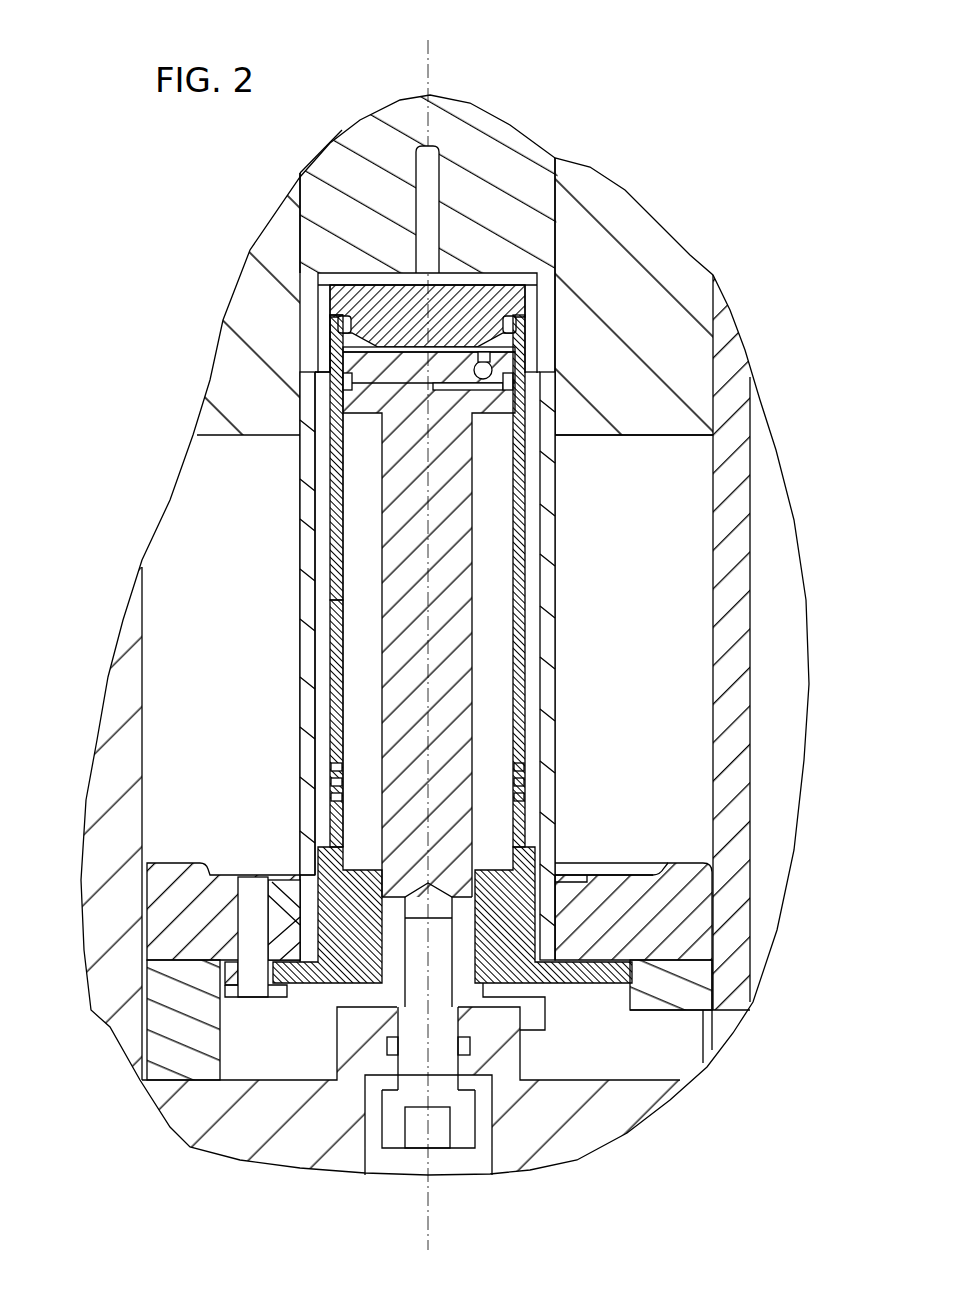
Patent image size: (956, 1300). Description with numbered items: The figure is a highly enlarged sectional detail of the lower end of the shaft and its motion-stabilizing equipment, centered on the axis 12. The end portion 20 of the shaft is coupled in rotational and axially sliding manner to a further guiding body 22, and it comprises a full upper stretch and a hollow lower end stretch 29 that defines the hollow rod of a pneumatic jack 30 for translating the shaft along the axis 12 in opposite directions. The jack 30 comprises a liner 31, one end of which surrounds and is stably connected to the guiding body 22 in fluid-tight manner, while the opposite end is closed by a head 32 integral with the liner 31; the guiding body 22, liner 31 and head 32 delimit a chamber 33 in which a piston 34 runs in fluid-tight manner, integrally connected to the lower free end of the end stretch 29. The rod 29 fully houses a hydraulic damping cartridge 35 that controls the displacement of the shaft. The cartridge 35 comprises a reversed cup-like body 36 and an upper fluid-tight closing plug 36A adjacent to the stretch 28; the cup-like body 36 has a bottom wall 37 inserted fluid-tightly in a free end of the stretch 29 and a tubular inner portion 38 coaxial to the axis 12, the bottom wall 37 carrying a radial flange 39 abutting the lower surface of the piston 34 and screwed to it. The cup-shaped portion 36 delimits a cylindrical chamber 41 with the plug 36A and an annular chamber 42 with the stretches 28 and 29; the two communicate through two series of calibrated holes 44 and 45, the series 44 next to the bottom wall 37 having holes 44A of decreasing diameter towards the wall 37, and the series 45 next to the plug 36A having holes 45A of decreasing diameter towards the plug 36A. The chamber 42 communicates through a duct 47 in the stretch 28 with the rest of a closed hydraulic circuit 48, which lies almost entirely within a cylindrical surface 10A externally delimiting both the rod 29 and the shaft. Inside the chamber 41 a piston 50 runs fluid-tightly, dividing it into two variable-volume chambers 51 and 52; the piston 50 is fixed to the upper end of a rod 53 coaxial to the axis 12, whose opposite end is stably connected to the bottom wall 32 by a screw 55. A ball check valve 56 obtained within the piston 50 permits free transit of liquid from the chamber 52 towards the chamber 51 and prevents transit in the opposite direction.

The cylindrical surface 10A is at (562, 548).
The axis 12 is at (436, 92).
The end portion 20 is at (296, 225).
The guiding body 22 is at (668, 225).
The stretch 28 is at (455, 175).
The end stretch 29 is at (549, 600).
The pneumatic jack 30 is at (688, 810).
The liner 31 is at (759, 568).
The head 32 is at (592, 1137).
The chamber 33 is at (710, 636).
The piston 34 is at (695, 932).
The hydraulic damping cartridge 35 is at (532, 705).
The cup-like body 36 is at (323, 654).
The closing plug 36A is at (548, 278).
The bottom wall 37 is at (335, 917).
The tubular inner portion 38 is at (526, 678).
The radial flange 39 is at (292, 985).
The cylindrical chamber 41 is at (348, 585).
The annular chamber 42 is at (320, 550).
The series of calibrated holes 44 is at (314, 800).
The holes 44A is at (332, 780).
The series of calibrated holes 45 is at (310, 400).
The holes 45A is at (318, 422).
The duct 47 is at (414, 210).
The closed hydraulic circuit 48 is at (425, 195).
The piston 50 is at (391, 344).
The variable-volume chamber 51 is at (348, 831).
The variable-volume chamber 52 is at (335, 352).
The rod 53 is at (456, 764).
The screw 55 is at (411, 1092).
The ball check valve 56 is at (528, 455).